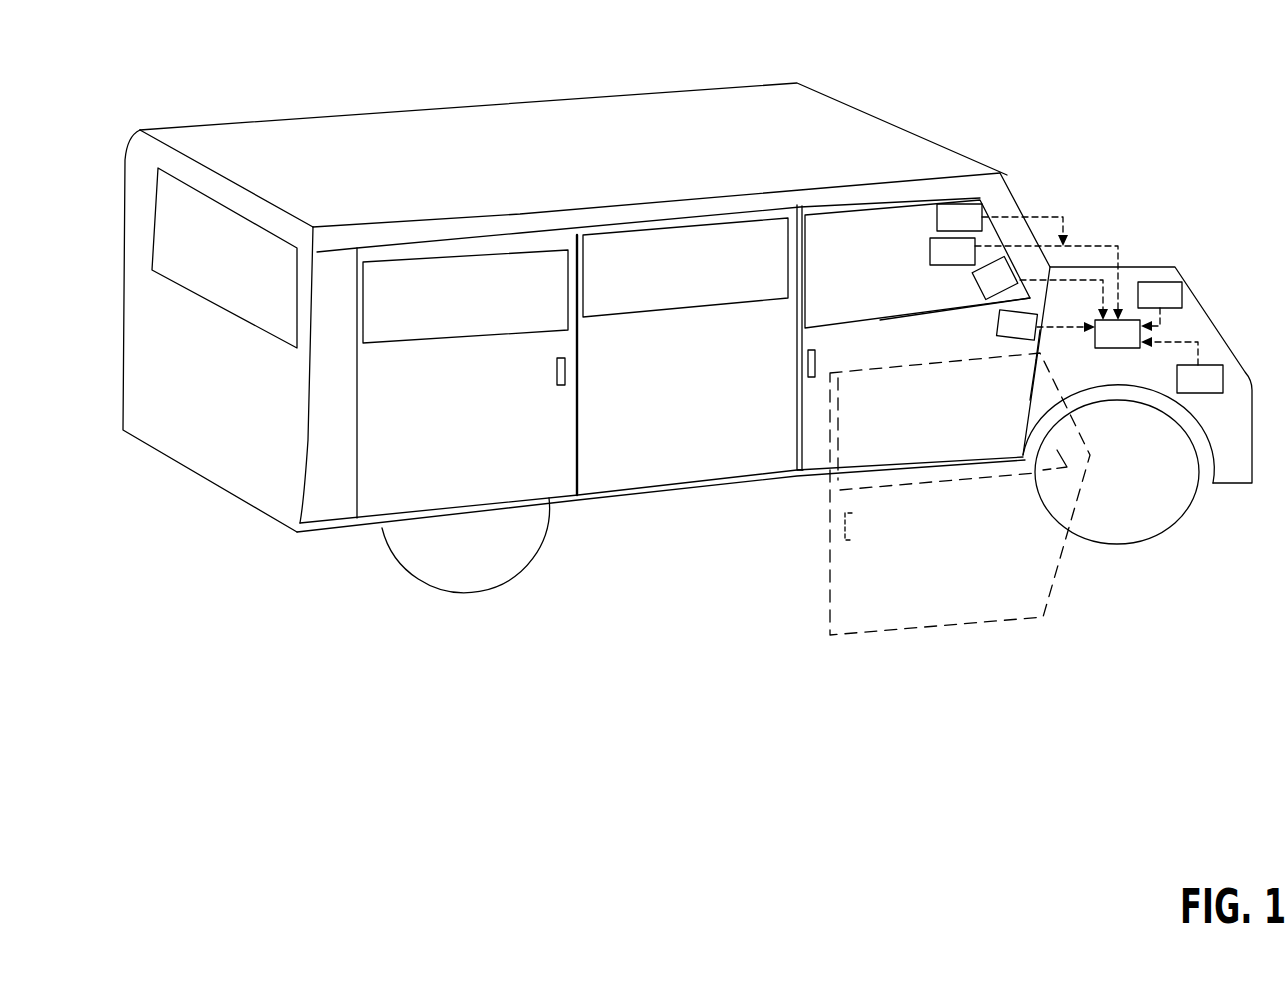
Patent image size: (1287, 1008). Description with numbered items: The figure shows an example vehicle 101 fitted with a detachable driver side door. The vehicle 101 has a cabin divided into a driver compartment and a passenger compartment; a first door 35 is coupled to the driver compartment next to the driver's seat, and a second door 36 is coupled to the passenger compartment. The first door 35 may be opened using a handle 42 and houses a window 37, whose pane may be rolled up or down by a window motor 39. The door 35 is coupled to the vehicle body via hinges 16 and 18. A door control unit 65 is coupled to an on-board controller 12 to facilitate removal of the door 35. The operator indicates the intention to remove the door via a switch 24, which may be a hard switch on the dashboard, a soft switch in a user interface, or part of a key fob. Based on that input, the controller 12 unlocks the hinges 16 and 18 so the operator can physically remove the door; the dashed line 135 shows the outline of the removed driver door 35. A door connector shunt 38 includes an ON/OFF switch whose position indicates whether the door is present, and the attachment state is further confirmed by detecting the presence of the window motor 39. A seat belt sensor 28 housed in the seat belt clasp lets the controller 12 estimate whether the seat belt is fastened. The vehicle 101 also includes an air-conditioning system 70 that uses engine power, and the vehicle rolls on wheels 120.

The vehicle 101 is at (1154, 43).
The second door 36 is at (503, 232).
The first door 35 is at (880, 200).
The handle 42 is at (815, 362).
The window 37 is at (936, 312).
The hinge 16 is at (1042, 316).
The hinge 18 is at (1030, 398).
The wheels 120 is at (457, 596).
The dashed line 135 is at (1018, 619).
The seat belt sensor 28 is at (947, 228).
The switch 24 is at (940, 262).
The window motor 39 is at (1040, 288).
The door connector shunt 38 is at (1046, 325).
The on-board controller 12 is at (1105, 345).
The air-conditioning system 70 is at (1148, 305).
The door control unit 65 is at (1188, 390).